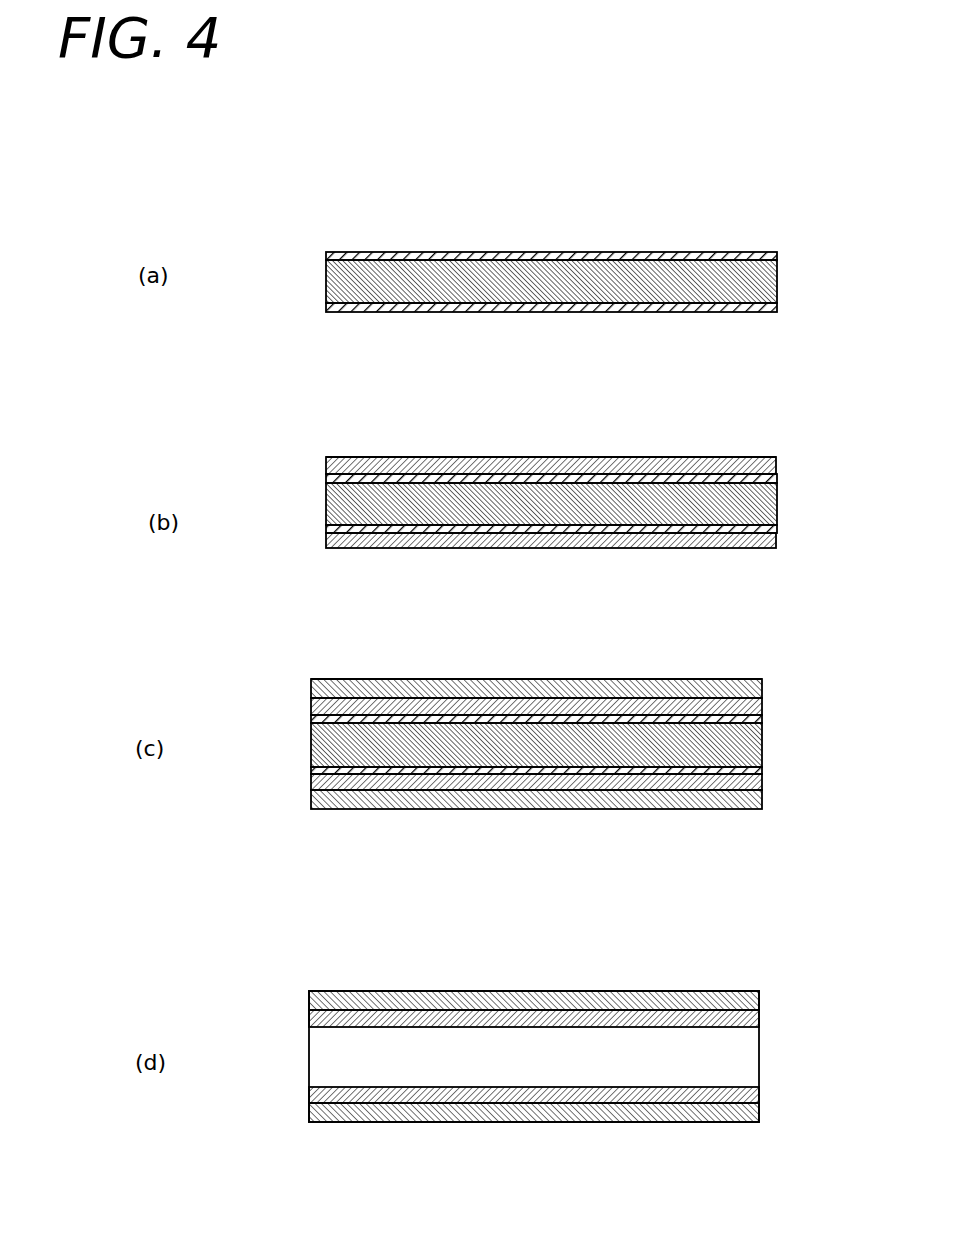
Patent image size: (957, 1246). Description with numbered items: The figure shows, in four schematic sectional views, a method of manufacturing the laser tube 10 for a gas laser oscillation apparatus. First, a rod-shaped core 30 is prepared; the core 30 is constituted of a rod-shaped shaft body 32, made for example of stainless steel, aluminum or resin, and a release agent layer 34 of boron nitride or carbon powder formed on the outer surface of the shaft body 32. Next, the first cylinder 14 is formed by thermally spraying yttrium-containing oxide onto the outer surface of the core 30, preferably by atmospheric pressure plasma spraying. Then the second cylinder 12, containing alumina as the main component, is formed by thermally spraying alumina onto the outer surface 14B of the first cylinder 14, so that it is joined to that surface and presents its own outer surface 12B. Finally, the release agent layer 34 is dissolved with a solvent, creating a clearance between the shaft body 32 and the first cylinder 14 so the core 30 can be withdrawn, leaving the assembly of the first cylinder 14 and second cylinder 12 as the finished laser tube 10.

The laser tube 10 is at (820, 927).
The second cylinder 12 is at (740, 692).
The outer surface of the second cylinder 12B is at (629, 678).
The first cylinder 14 is at (697, 460).
The outer surface of the first cylinder 14B is at (635, 457).
The core 30 is at (595, 187).
The shaft body 32 is at (508, 272).
The release agent layer 34 is at (476, 255).